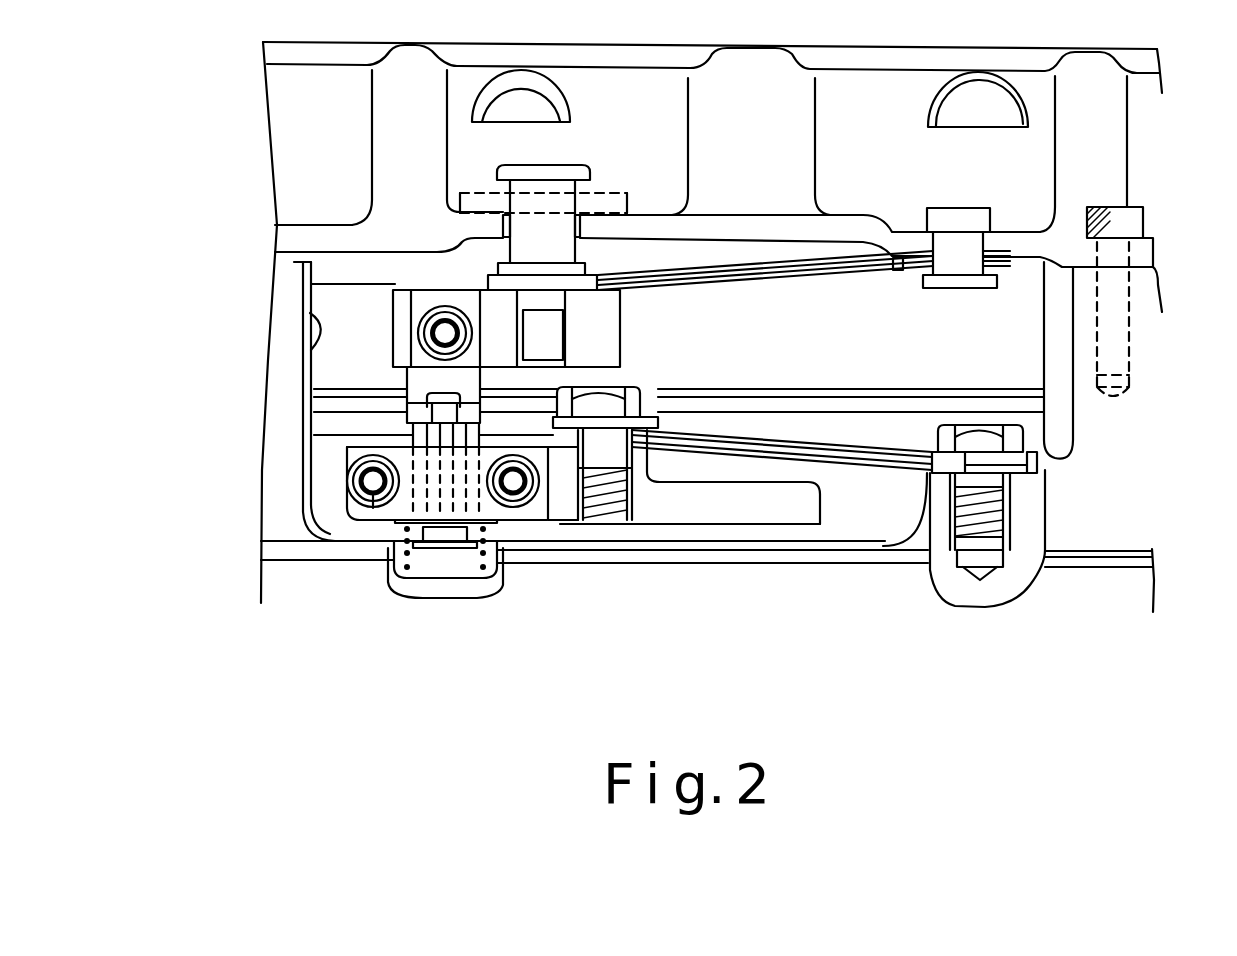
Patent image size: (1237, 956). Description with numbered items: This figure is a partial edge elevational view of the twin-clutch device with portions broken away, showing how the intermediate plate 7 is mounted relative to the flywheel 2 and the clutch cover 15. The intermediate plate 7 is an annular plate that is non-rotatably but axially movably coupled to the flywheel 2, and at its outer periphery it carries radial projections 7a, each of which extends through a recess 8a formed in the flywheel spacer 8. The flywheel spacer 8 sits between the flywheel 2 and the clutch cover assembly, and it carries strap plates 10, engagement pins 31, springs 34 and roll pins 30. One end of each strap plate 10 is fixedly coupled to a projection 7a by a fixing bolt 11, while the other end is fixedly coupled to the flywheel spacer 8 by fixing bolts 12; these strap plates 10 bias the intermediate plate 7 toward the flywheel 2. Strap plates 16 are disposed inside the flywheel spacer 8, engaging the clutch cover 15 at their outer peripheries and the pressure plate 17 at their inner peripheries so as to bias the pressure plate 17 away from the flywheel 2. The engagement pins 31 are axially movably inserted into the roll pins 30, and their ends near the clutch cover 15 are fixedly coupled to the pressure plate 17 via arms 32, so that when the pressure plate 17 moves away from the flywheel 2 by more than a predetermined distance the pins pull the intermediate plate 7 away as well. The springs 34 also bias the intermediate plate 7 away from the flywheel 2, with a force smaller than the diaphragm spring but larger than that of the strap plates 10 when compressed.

The flywheel 2 is at (1142, 590).
The intermediate plate 7 is at (863, 507).
The radial projections 7a is at (703, 502).
The flywheel spacer 8 is at (283, 293).
The recess 8a is at (307, 353).
The strap plates 10 is at (898, 472).
The fixing bolt 11 is at (620, 400).
The fixing bolts 12 is at (993, 440).
The clutch cover 15 is at (285, 100).
The strap plates 16 is at (787, 278).
The pressure plate 17 is at (1017, 330).
The roll pins 30 is at (407, 434).
The engagement pins 31 is at (440, 545).
The arms 32 is at (417, 347).
The springs 34 is at (503, 560).